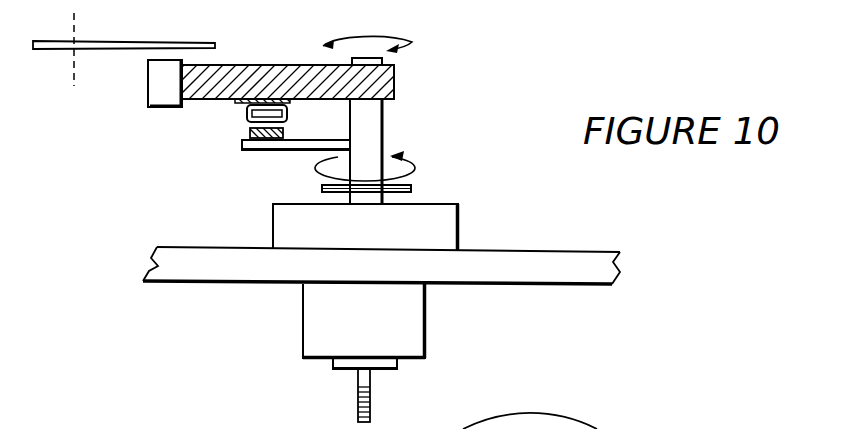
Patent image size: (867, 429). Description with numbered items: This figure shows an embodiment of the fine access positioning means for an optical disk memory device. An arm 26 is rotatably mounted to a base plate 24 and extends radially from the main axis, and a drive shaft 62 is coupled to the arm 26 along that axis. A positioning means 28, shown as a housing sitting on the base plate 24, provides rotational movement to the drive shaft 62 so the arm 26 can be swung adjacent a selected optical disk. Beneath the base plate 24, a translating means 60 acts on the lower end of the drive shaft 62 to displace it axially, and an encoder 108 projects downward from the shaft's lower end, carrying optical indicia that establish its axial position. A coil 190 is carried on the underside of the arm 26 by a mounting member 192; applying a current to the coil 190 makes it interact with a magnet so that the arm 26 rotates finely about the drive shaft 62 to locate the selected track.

The arm 26 is at (258, 65).
The drive shaft 62 is at (383, 113).
The coil 190 is at (247, 120).
The mounting member 192 is at (292, 107).
The positioning means 28 is at (460, 215).
The base plate 24 is at (550, 272).
The translating means 60 is at (422, 323).
The encoder 108 is at (371, 383).